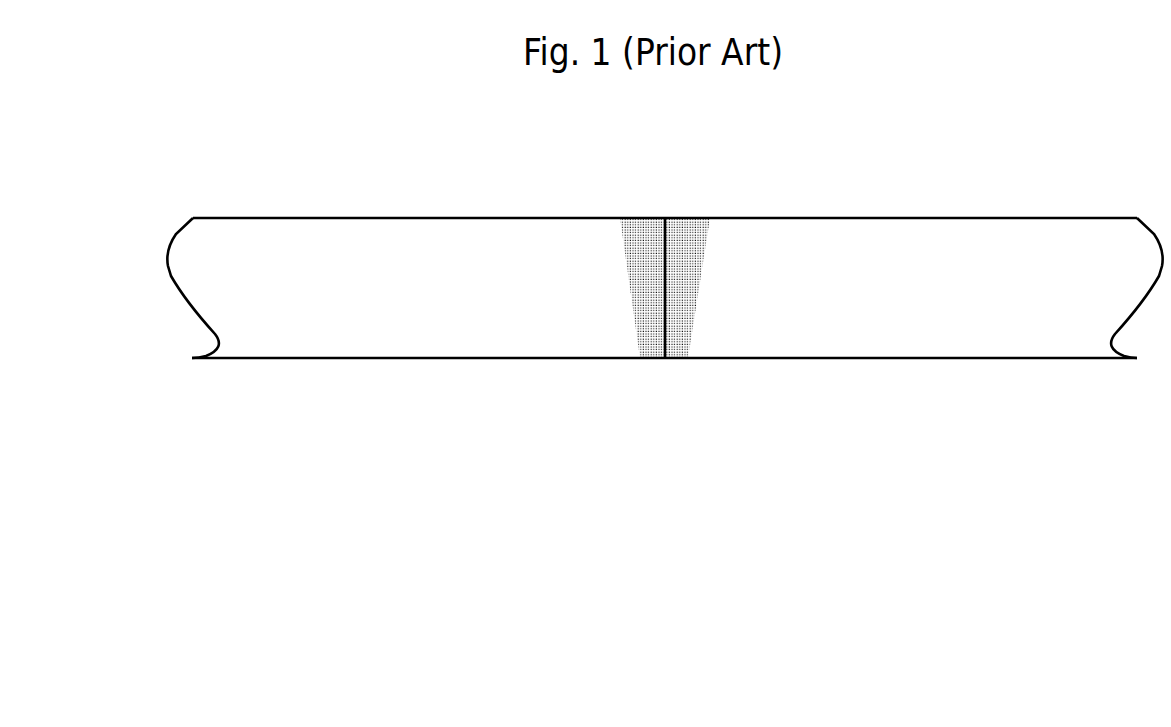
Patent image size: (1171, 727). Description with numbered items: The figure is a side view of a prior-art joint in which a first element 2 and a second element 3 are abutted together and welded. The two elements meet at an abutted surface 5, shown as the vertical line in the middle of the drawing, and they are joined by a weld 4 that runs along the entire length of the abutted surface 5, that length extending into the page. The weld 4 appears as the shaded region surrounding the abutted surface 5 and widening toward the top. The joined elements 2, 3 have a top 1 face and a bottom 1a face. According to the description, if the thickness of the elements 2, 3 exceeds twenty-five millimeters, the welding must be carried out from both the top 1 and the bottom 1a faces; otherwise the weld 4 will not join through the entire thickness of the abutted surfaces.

The top face 1 is at (258, 166).
The bottom face 1a is at (452, 371).
The first element 2 is at (288, 334).
The second element 3 is at (1012, 232).
The weld 4 is at (685, 231).
The abutted surface 5 is at (663, 338).